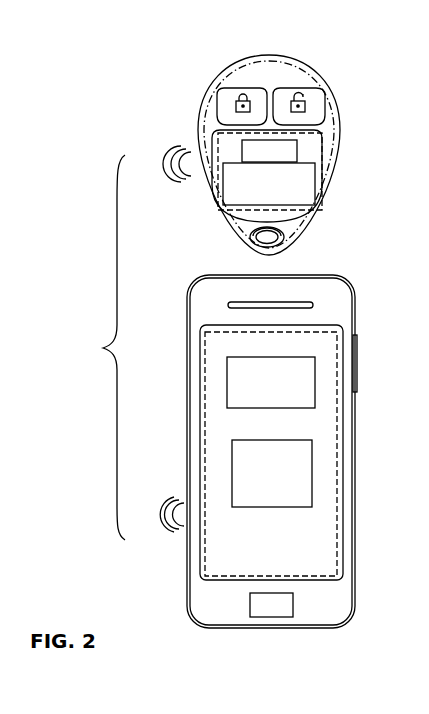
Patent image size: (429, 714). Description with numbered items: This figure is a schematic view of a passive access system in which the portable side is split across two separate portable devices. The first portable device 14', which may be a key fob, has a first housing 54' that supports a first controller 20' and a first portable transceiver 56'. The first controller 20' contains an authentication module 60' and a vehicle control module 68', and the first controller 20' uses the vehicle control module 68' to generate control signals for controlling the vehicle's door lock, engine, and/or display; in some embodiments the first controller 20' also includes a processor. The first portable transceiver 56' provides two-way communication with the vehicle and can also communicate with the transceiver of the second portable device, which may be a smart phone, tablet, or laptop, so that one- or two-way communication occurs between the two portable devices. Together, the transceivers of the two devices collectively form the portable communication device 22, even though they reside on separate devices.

The portable communication device 22 is at (100, 347).
The first portable device 14' is at (282, 148).
The first housing 54' is at (292, 154).
The first controller 20' is at (298, 165).
The authentication module 60' is at (310, 157).
The vehicle control module 68' is at (300, 184).
The first portable transceiver 56' is at (178, 148).